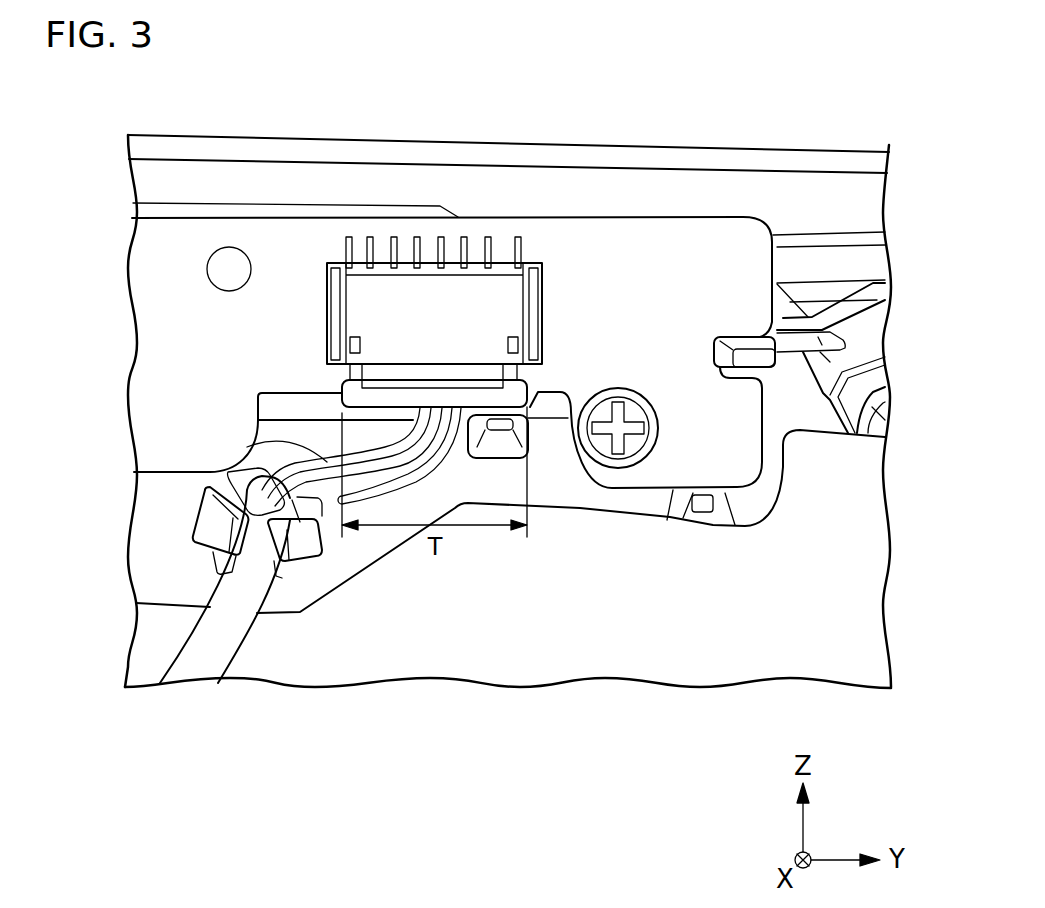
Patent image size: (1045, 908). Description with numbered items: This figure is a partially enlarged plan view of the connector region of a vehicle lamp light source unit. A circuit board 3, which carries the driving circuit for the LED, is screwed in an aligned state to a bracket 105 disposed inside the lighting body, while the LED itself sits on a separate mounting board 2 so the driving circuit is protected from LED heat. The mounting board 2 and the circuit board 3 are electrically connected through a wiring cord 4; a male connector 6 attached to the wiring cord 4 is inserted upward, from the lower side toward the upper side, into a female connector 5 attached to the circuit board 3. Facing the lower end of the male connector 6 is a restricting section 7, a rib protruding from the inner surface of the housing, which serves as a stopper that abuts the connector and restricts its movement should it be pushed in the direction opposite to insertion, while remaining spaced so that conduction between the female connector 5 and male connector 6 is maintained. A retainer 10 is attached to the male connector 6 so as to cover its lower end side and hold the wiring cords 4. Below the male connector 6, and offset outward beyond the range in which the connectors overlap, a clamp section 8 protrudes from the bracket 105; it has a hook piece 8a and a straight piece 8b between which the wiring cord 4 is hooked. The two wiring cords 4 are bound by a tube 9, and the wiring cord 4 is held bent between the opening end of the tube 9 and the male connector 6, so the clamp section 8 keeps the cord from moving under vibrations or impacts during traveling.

The mounting board 2 is at (830, 555).
The circuit board 3 is at (620, 250).
The wiring cord 4 is at (250, 446).
The female connector 5 is at (427, 292).
The male connector 6 is at (380, 376).
The restricting section 7 is at (500, 447).
The clamp section 8 is at (285, 626).
The hook piece 8a is at (298, 552).
The straight piece 8b is at (235, 543).
The tube 9 is at (217, 640).
The retainer 10 is at (367, 398).
The bracket 105 is at (163, 532).